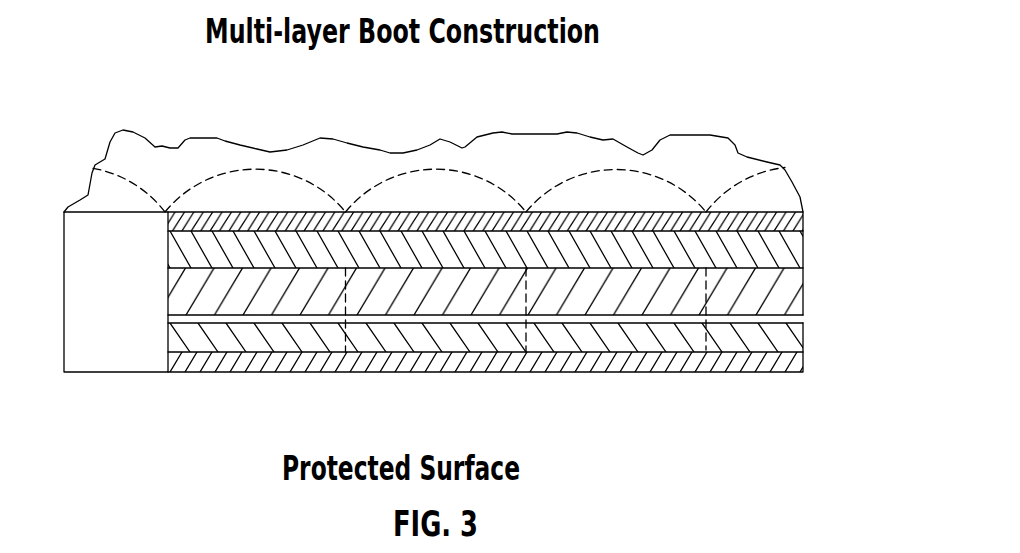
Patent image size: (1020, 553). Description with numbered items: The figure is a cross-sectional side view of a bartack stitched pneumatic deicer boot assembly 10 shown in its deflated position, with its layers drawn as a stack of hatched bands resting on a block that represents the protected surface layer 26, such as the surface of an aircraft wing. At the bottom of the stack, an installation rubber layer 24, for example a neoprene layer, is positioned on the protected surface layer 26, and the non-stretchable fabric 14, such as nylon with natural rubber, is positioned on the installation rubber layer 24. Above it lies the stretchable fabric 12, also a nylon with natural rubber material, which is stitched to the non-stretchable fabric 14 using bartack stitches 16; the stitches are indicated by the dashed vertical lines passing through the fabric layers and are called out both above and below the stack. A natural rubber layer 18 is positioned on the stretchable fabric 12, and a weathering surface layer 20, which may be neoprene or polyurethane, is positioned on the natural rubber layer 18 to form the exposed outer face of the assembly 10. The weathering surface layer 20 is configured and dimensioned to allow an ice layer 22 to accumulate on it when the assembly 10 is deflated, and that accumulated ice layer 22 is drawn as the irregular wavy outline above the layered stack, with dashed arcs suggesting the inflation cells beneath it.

The bartack stitched pneumatic deicer boot assembly 10 is at (826, 202).
The stretchable fabric 12 is at (804, 287).
The non-stretchable fabric 14 is at (797, 342).
The bartack stitches 16 is at (705, 267).
The natural rubber layer 18 is at (416, 243).
The weathering surface layer 20 is at (263, 212).
The ice layer 22 is at (125, 130).
The installation rubber layer 24 is at (238, 368).
The protected surface layer 26 is at (120, 411).